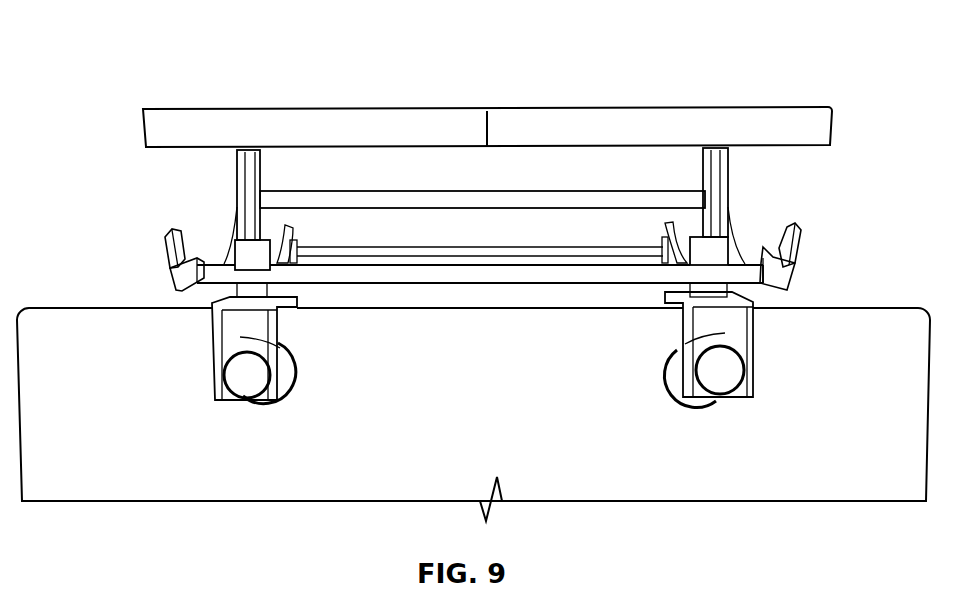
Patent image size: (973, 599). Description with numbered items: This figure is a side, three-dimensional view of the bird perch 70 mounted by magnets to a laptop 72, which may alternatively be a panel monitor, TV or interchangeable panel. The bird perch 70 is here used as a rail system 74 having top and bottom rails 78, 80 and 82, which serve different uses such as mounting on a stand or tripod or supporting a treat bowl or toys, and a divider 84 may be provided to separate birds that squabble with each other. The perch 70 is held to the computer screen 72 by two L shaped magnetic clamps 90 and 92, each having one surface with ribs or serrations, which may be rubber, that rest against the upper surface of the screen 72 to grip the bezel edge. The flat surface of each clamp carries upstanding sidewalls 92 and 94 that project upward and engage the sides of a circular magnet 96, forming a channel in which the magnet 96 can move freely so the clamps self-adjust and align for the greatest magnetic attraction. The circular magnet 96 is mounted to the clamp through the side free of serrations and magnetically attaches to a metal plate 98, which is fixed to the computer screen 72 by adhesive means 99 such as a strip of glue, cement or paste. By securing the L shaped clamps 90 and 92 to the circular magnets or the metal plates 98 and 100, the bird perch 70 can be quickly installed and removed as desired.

The bird perch 70 is at (302, 86).
The laptop 72 is at (350, 300).
The rail system 74 is at (410, 180).
The top rail 78 is at (568, 193).
The rail 80 is at (477, 248).
The bottom rail 82 is at (533, 282).
The divider 84 is at (528, 137).
The magnetic clamp 90 is at (240, 382).
The magnetic clamp 92 is at (750, 303).
The upstanding sidewall 94 is at (298, 306).
The circular magnet 96 is at (280, 402).
The metal plate 98 is at (257, 402).
The adhesive means 99 is at (293, 340).
The metal plate 100 is at (670, 377).